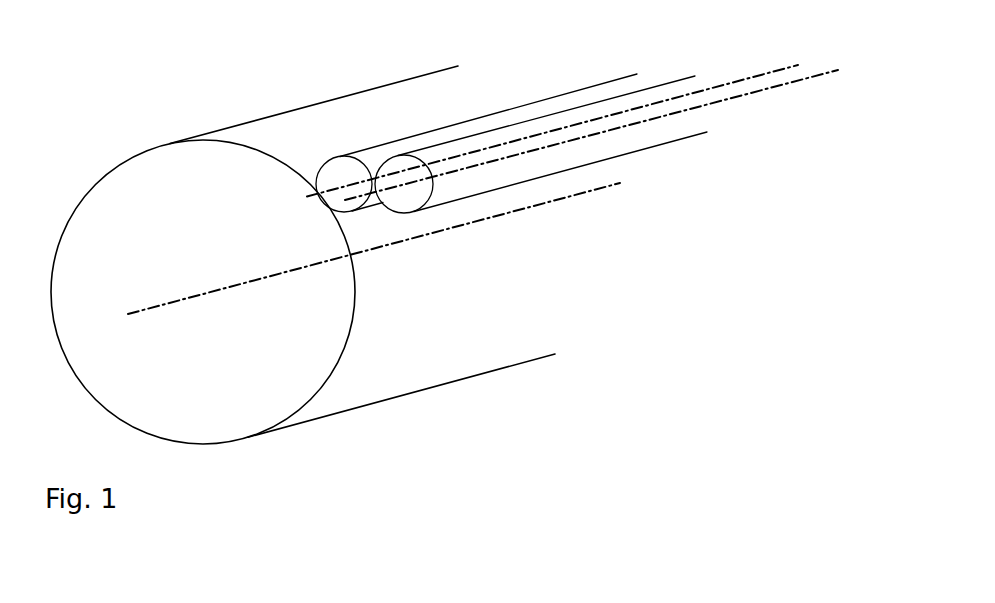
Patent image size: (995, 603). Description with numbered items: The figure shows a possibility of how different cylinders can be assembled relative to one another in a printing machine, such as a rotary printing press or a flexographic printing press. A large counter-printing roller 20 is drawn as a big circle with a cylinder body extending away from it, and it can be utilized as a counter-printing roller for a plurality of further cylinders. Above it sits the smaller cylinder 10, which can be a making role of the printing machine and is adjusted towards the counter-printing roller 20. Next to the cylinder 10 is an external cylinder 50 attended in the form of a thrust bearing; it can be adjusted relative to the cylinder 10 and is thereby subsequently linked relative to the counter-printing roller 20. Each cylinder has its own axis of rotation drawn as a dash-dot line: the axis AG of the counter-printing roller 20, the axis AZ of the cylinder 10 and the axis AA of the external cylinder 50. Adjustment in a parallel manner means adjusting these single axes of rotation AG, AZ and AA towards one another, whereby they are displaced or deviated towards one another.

The counter-printing roller 20 is at (193, 138).
The cylinder 10 is at (562, 92).
The external cylinder 50 is at (655, 82).
The axis of rotation AG is at (158, 307).
The axis of rotation AZ is at (358, 180).
The axis of rotation AA is at (733, 97).